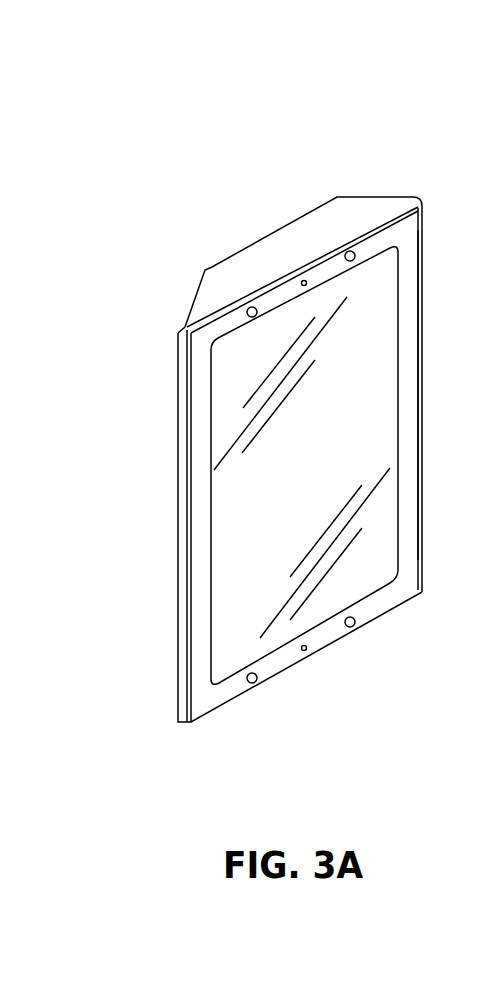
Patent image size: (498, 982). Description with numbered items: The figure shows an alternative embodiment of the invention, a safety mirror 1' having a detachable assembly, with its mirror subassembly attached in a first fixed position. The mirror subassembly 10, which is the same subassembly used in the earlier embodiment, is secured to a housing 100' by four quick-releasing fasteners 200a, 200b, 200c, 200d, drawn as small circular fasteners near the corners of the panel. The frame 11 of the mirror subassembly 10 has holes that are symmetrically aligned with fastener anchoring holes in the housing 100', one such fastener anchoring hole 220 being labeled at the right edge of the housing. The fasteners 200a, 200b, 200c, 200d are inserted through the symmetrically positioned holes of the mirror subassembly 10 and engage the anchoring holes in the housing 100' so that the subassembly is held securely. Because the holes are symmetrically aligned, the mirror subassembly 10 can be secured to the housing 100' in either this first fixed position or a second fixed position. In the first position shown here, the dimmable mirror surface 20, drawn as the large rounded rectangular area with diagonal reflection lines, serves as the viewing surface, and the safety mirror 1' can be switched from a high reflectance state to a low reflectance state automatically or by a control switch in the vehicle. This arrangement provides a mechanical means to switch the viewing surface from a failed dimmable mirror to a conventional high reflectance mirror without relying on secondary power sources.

The safety mirror 1' is at (299, 433).
The housing 100' is at (276, 394).
The mirror subassembly 10 is at (230, 522).
The frame 11 is at (200, 628).
The dimmable mirror surface 20 is at (383, 393).
The fastener anchoring hole 220 is at (458, 395).
The quick-releasing fastener 200a is at (249, 309).
The quick-releasing fastener 200b is at (350, 251).
The quick-releasing fastener 200c is at (252, 684).
The quick-releasing fastener 200d is at (352, 627).